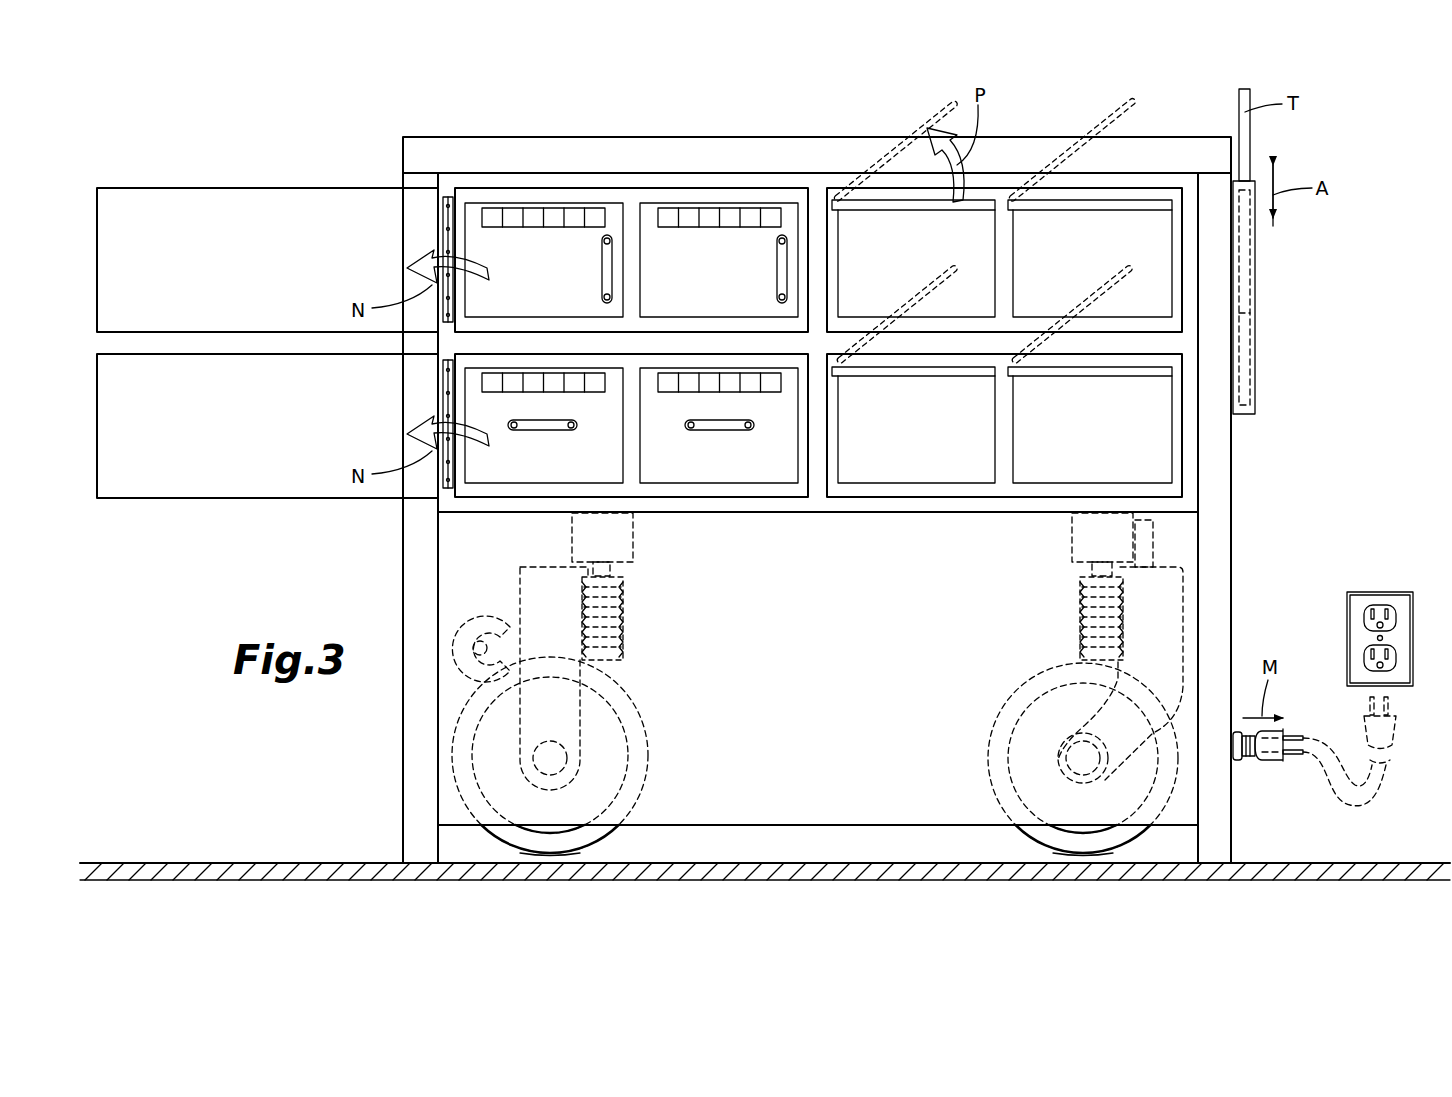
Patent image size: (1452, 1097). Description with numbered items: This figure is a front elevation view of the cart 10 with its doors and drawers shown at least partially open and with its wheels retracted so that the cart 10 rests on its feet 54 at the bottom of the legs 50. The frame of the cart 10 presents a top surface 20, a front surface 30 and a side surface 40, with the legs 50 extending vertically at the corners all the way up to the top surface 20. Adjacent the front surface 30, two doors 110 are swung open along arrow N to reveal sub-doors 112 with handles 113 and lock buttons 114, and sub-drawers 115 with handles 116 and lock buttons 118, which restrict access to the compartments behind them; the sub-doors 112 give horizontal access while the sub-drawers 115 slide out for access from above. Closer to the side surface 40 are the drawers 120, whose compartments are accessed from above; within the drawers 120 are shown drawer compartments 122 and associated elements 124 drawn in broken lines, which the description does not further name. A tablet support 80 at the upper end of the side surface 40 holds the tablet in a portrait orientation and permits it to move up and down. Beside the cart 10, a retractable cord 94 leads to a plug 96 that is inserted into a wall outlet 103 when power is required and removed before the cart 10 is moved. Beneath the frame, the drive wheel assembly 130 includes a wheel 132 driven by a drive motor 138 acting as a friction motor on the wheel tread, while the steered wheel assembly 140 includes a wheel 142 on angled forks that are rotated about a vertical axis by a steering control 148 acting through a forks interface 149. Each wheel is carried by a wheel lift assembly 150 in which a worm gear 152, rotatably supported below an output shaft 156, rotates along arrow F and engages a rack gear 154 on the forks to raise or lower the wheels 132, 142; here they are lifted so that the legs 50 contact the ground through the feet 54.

The cart 10 is at (374, 132).
The top surface 20 is at (637, 137).
The front surface 30 is at (818, 188).
The side surface 40 is at (1233, 470).
The legs 50 is at (408, 545).
The feet 54 is at (403, 832).
The tablet support 80 is at (1270, 280).
The cord 94 is at (1370, 800).
The plug 96 is at (1270, 762).
The wall outlet 103 is at (1380, 592).
The doors 110 is at (275, 343).
The sub-doors 112 is at (631, 260).
The handles 113 is at (602, 262).
The lock buttons 114 is at (543, 228).
The sub-drawers 115 is at (631, 425).
The handles 116 is at (545, 431).
The lock buttons 118 is at (543, 393).
The drawers 120 is at (1070, 290).
The tray 122 is at (1002, 341).
The slide rod 124 is at (922, 128).
The drive wheel assembly 130 is at (662, 737).
The wheels 132 is at (548, 855).
The drive motor 138 is at (447, 655).
The steered wheel assembly 140 is at (1084, 653).
The wheel 142 is at (1085, 855).
The steering control 148 is at (1105, 540).
The forks interface 149 is at (1153, 545).
The wheel lift assembly 150 is at (555, 728).
The worm gear 152 is at (625, 620).
The rack gear 154 is at (580, 617).
The output shaft 156 is at (633, 532).